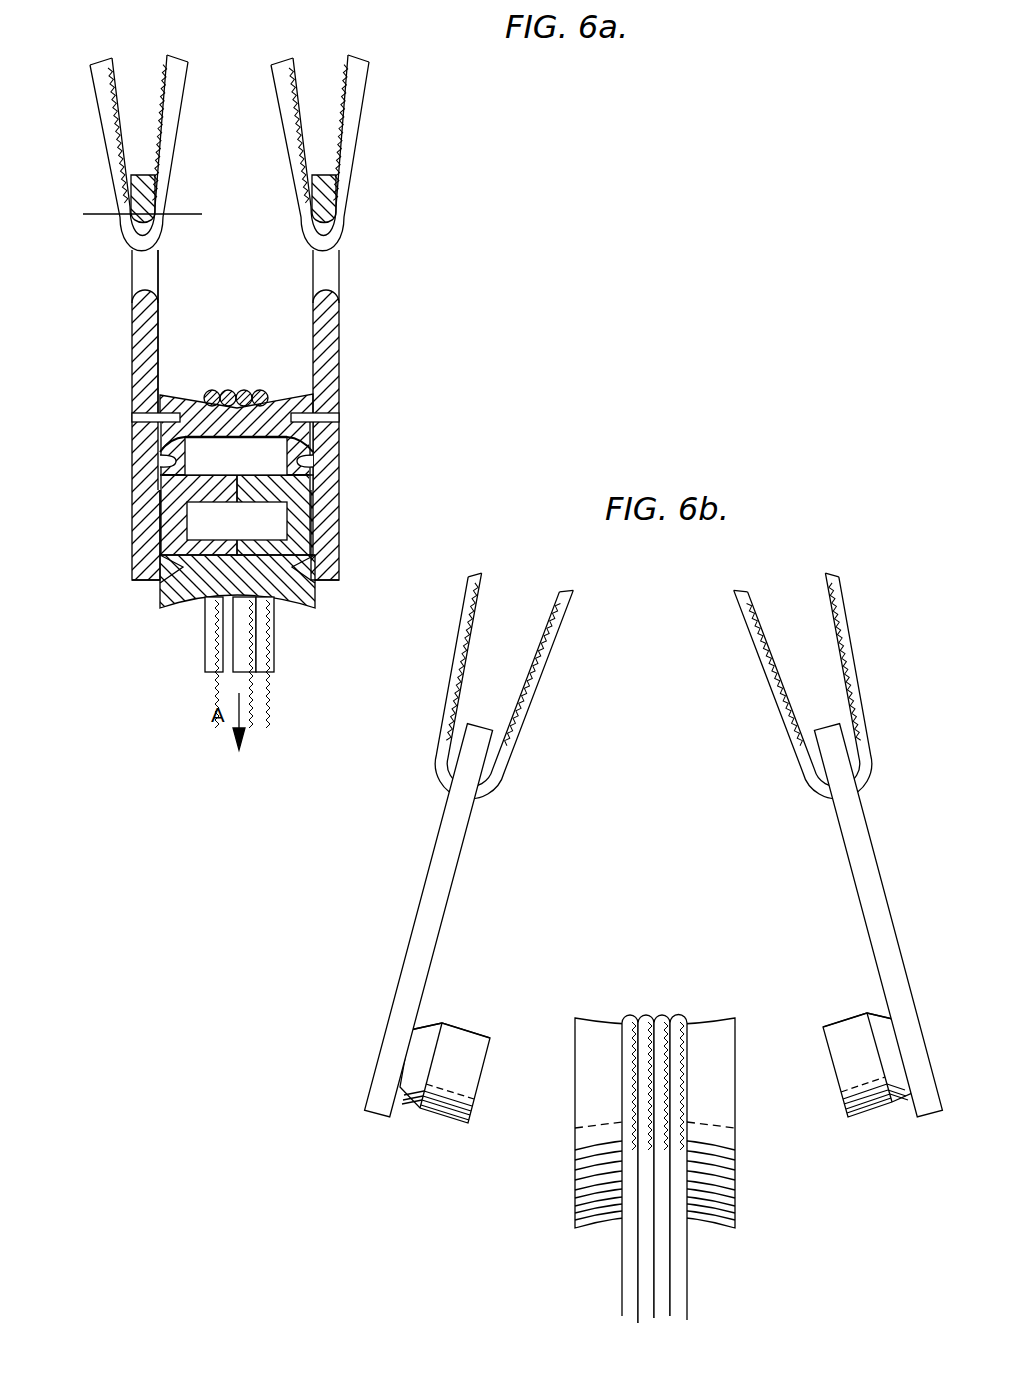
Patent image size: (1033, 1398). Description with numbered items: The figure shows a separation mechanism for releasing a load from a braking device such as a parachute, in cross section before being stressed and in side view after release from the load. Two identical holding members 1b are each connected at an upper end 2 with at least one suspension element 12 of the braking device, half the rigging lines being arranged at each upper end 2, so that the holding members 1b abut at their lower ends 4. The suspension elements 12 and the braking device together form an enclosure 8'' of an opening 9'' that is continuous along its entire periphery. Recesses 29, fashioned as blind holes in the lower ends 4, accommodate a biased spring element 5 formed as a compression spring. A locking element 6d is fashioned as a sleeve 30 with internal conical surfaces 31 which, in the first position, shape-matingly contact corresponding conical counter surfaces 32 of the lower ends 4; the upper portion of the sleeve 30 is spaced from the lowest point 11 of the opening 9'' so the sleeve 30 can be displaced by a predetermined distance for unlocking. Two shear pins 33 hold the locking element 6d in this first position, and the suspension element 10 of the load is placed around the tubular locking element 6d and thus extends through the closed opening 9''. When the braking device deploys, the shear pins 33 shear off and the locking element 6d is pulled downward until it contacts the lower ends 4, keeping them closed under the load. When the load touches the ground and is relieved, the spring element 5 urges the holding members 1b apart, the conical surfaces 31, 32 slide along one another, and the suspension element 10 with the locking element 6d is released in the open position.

In FIG. 6a, the holding member 1b is at (132, 316).
In FIG. 6b, the holding member 1b is at (458, 862).
In FIG. 6a, the upper end 2 is at (143, 176).
In FIG. 6a, the lower end 4 is at (327, 500).
In FIG. 6b, the lower end 4 is at (476, 1056).
In FIG. 6a, the spring element 5 is at (263, 512).
In FIG. 6a, the locking element 6d is at (195, 605).
In FIG. 6b, the locking element 6d is at (738, 1172).
In FIG. 6a, the enclosure 8'' is at (184, 331).
In FIG. 6a, the opening 9'' is at (120, 234).
In FIG. 6a, the suspension element 10 is at (259, 391).
In FIG. 6b, the suspension element 10 is at (667, 1262).
In FIG. 6a, the lowest point 11 is at (158, 492).
In FIG. 6a, the suspension element 12 is at (105, 140).
In FIG. 6b, the suspension element 12 is at (512, 712).
In FIG. 6a, the recess 29 is at (190, 520).
In FIG. 6a, the sleeve 30 is at (270, 585).
In FIG. 6a, the internal conical surface 31 is at (168, 460).
In FIG. 6a, the conical counter surface 32 is at (165, 478).
In FIG. 6b, the conical counter surface 32 is at (430, 1030).
In FIG. 6a, the shear pin 33 is at (135, 416).